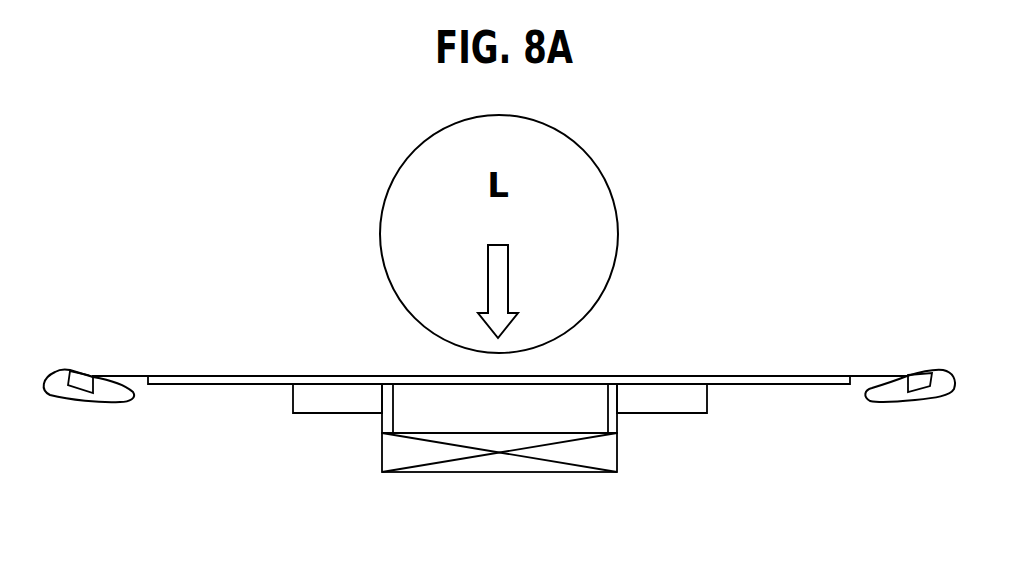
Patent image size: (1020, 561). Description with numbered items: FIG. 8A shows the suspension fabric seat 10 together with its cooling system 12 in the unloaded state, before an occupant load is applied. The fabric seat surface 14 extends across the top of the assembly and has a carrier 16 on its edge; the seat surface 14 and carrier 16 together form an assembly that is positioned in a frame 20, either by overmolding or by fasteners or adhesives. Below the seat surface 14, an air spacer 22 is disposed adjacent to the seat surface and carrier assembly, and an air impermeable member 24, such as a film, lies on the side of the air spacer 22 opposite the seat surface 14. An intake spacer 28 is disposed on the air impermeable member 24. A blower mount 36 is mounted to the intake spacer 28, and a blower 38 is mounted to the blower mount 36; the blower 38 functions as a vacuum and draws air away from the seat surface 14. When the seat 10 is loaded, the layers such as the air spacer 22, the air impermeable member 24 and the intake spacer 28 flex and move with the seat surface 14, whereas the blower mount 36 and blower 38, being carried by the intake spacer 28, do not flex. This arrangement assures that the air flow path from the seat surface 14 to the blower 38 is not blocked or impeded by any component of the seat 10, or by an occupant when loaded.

The suspension fabric seat 10 is at (499, 386).
The suspension fabric seat cooling system 12 is at (471, 459).
The fabric seat surface 14 is at (697, 375).
The carrier 16 is at (923, 373).
The frame 20 is at (933, 393).
The air spacer 22 is at (243, 385).
The air impermeable member 24 is at (205, 385).
The intake spacer 28 is at (697, 407).
The blower mount 36 is at (617, 427).
The blower 38 is at (572, 465).